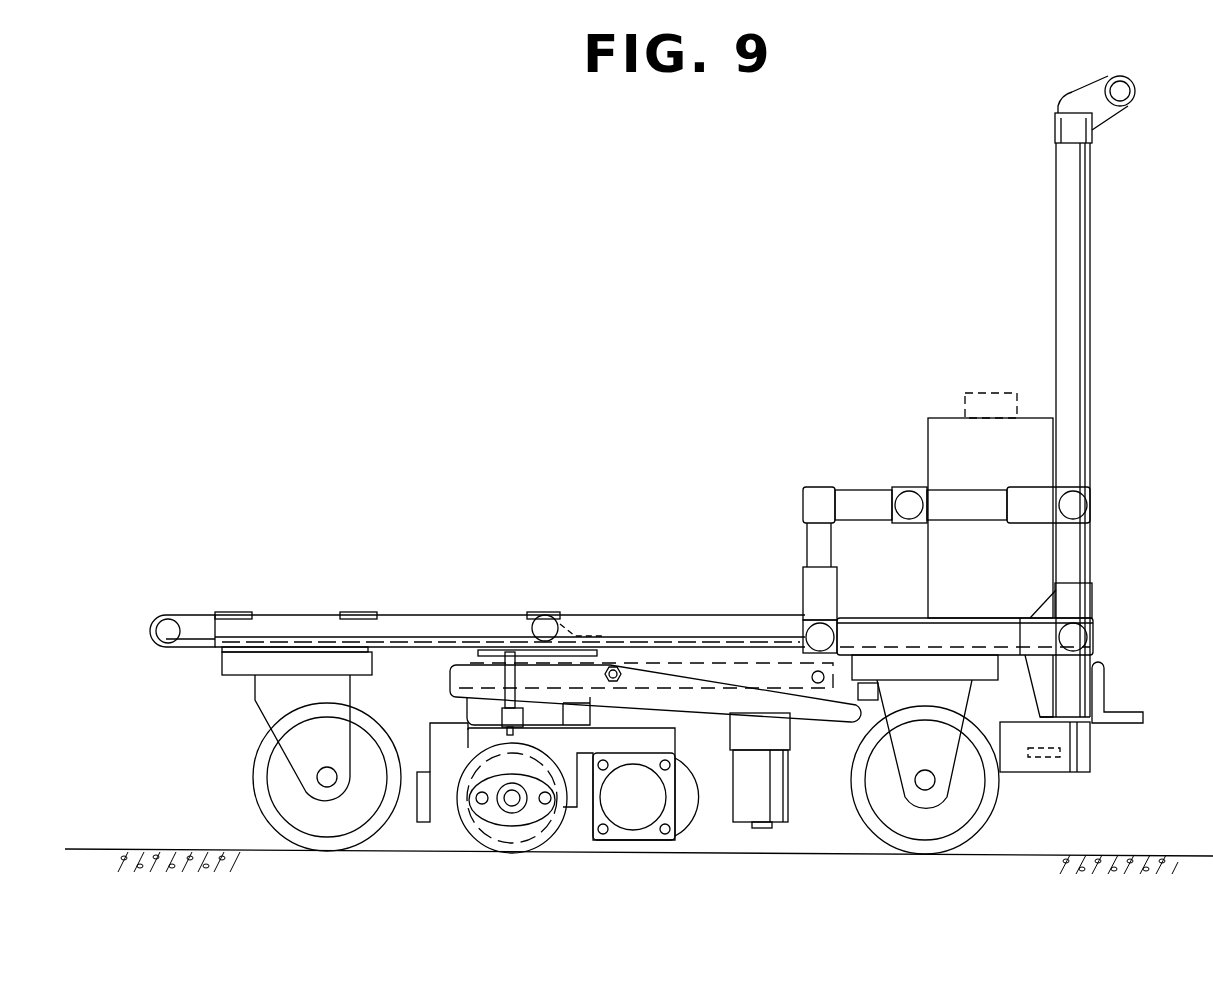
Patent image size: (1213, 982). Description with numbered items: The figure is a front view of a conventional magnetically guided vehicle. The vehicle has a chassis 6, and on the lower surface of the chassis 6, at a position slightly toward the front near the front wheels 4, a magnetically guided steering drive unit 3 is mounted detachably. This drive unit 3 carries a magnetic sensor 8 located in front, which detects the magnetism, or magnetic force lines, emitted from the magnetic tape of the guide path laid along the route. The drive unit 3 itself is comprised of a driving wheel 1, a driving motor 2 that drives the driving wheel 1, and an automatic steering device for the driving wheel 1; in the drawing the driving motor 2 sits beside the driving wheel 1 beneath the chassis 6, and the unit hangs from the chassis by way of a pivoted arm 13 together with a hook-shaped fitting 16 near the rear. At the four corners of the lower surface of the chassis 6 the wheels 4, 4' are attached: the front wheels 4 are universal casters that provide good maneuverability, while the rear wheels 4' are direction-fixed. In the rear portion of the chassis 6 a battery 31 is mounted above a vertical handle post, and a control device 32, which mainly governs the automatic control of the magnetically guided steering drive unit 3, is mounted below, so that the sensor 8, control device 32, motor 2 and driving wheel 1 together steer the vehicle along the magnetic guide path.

The driving wheel 1 is at (537, 830).
The driving motor 2 is at (683, 818).
The magnetically guided steering drive unit 3 is at (438, 672).
The front wheels 4 is at (311, 792).
The rear wheels 4' is at (938, 782).
The chassis 6 is at (195, 625).
The magnetic sensor 8 is at (417, 822).
The arm 13 is at (677, 678).
The hook 16 is at (1123, 718).
The battery 31 is at (1042, 457).
The control device 32 is at (1088, 753).